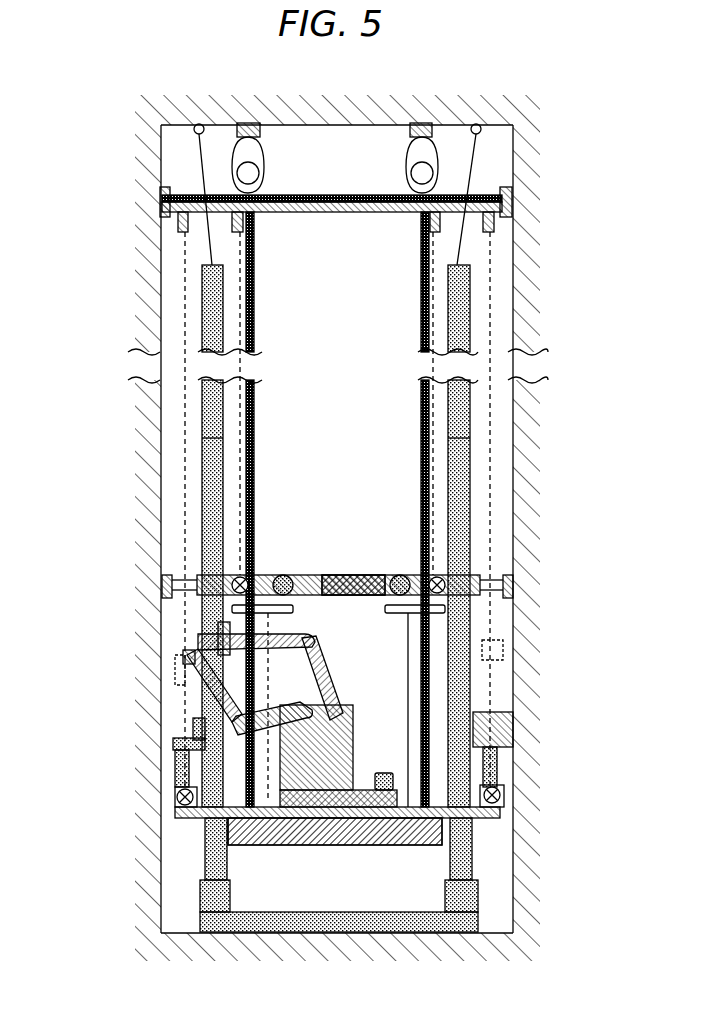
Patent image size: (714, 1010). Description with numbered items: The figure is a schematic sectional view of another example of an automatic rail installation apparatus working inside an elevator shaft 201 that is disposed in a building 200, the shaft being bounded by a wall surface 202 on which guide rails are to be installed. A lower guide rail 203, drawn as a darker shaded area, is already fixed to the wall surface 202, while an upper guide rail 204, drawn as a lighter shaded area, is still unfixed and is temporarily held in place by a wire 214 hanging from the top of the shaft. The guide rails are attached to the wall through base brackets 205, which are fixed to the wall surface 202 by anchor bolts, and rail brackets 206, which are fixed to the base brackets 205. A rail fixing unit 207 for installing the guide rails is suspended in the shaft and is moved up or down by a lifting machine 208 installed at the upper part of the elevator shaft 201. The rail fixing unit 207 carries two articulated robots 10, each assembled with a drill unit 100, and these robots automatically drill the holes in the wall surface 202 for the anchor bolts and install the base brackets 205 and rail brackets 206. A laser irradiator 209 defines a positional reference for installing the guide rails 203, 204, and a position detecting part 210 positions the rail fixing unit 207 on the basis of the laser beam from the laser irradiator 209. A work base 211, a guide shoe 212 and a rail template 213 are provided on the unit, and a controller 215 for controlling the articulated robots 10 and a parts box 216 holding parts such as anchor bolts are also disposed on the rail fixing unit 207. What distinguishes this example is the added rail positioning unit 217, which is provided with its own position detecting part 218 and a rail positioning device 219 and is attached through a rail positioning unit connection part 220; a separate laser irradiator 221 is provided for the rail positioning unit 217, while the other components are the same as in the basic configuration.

The articulated robot 10 is at (195, 705).
The drill unit 100 is at (185, 660).
The building 200 is at (170, 172).
The elevator shaft 201 is at (183, 270).
The wall surface 202 is at (183, 437).
The guide rail 203 is at (212, 880).
The guide rail 204 is at (224, 312).
The base bracket 205 is at (180, 682).
The rail bracket 206 is at (172, 627).
The rail fixing unit 207 is at (490, 812).
The lifting machine 208 is at (405, 162).
The laser irradiator 209 is at (183, 224).
The position detecting part 210 is at (185, 800).
The work base 211 is at (445, 830).
The guide shoe 212 is at (440, 848).
The rail template 213 is at (478, 925).
The wire 214 is at (216, 262).
The controller 215 is at (386, 773).
The parts box 216 is at (345, 705).
The rail positioning unit 217 is at (318, 575).
The position detecting part 218 is at (237, 582).
The rail positioning device 219 is at (482, 572).
The rail positioning unit connection part 220 is at (412, 612).
The laser irradiator 221 is at (256, 226).